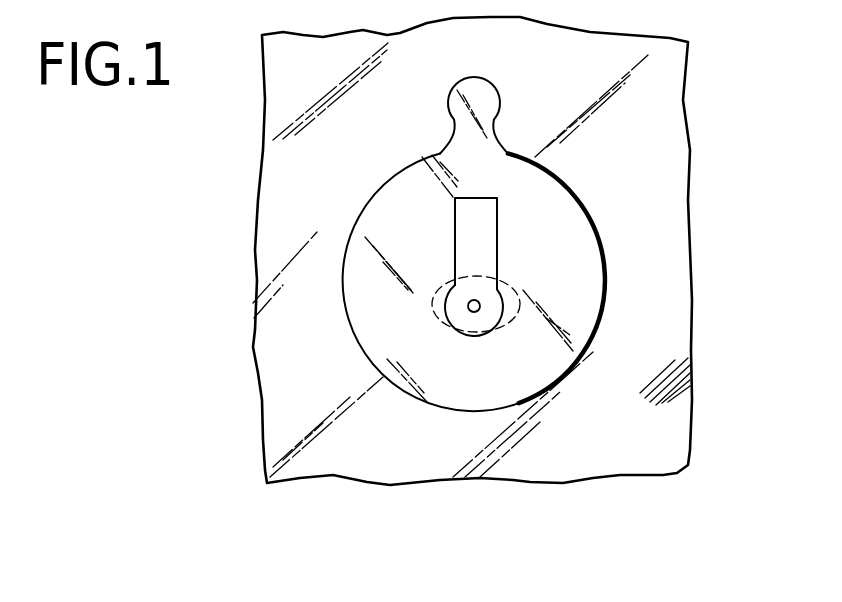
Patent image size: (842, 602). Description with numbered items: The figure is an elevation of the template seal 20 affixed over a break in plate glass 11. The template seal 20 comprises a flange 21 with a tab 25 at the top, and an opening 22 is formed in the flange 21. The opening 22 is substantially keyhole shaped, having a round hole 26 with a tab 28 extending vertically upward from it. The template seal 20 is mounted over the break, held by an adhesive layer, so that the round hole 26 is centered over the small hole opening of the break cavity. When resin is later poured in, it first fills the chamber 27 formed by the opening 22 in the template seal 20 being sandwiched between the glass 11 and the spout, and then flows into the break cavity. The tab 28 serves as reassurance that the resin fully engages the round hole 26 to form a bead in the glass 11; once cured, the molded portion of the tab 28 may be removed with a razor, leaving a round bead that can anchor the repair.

The glass 11 is at (673, 427).
The template seal 20 is at (515, 234).
The flange 21 is at (577, 197).
The opening 22 is at (505, 268).
The tab 25 is at (485, 95).
The round hole 26 is at (460, 310).
The chamber 27 is at (455, 302).
The tab 28 is at (457, 250).